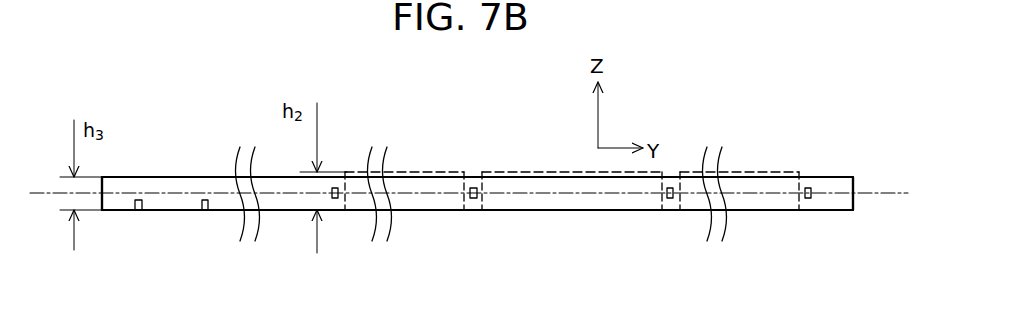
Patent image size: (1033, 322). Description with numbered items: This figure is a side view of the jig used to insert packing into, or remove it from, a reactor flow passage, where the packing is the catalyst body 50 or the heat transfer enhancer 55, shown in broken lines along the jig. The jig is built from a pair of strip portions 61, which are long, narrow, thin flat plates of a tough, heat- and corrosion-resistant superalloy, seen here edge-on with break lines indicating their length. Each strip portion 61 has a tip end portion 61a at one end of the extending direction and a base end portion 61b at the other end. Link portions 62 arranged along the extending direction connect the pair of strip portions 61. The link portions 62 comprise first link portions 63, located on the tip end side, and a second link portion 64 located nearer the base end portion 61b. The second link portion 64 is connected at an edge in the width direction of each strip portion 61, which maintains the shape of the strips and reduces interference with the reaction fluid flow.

The catalyst body 50 is at (572, 156).
The heat transfer enhancer 55 is at (557, 171).
The strip portion 61 is at (477, 149).
The tip end portion 61a is at (830, 176).
The base end portion 61b is at (160, 176).
The link portion 62 is at (504, 241).
The first link portion 63 is at (337, 198).
The second link portion 64 is at (208, 210).